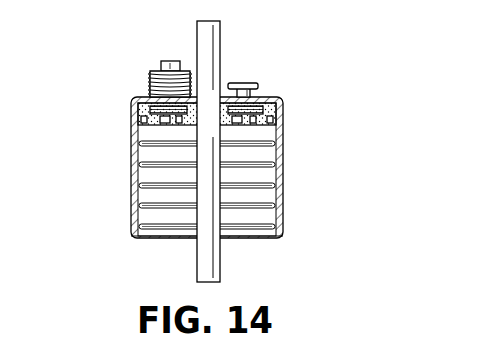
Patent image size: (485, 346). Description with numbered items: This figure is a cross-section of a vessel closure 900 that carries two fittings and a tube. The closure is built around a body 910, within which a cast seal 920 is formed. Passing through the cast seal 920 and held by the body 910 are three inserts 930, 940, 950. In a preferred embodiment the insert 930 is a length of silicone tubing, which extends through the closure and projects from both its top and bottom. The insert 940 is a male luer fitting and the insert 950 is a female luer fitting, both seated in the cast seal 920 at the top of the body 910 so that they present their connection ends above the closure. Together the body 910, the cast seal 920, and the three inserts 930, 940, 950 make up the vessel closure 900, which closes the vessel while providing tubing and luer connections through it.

The vessel closure 900 is at (106, 38).
The body 910 is at (281, 100).
The cast seal 920 is at (139, 113).
The insert 930 is at (221, 33).
The insert 940 is at (151, 84).
The insert 950 is at (256, 83).